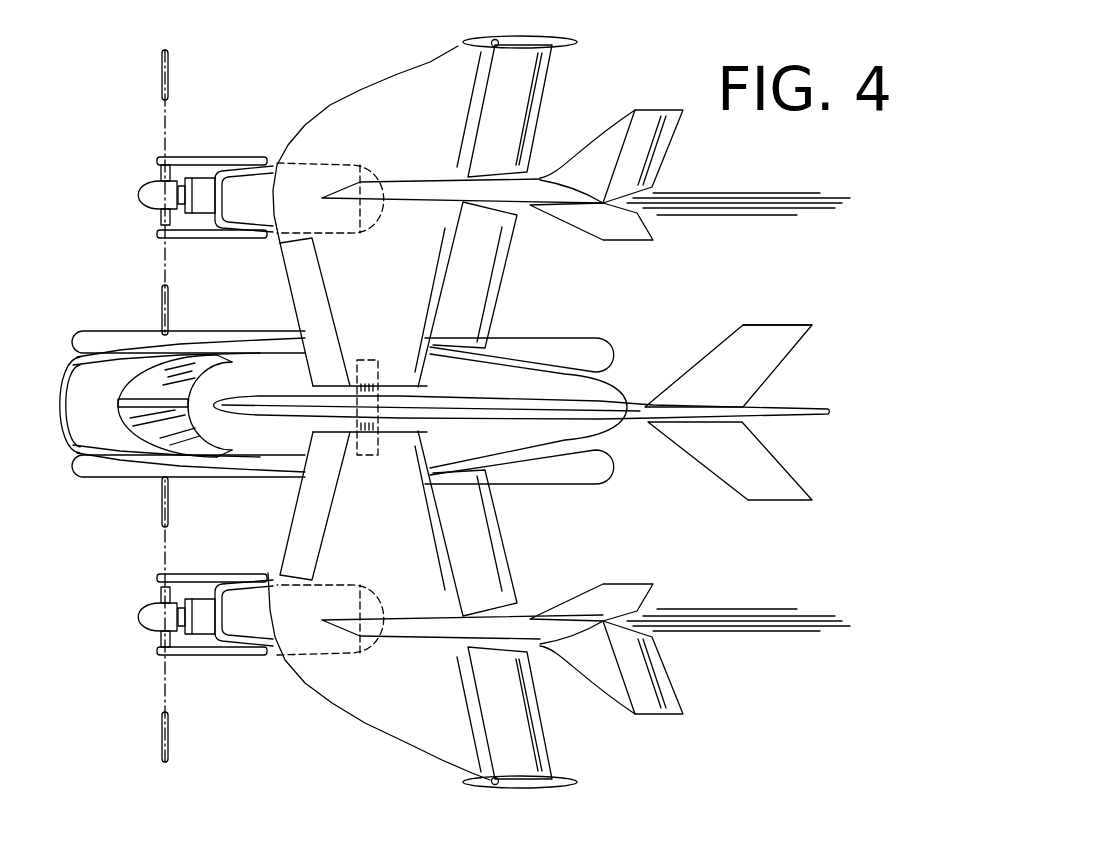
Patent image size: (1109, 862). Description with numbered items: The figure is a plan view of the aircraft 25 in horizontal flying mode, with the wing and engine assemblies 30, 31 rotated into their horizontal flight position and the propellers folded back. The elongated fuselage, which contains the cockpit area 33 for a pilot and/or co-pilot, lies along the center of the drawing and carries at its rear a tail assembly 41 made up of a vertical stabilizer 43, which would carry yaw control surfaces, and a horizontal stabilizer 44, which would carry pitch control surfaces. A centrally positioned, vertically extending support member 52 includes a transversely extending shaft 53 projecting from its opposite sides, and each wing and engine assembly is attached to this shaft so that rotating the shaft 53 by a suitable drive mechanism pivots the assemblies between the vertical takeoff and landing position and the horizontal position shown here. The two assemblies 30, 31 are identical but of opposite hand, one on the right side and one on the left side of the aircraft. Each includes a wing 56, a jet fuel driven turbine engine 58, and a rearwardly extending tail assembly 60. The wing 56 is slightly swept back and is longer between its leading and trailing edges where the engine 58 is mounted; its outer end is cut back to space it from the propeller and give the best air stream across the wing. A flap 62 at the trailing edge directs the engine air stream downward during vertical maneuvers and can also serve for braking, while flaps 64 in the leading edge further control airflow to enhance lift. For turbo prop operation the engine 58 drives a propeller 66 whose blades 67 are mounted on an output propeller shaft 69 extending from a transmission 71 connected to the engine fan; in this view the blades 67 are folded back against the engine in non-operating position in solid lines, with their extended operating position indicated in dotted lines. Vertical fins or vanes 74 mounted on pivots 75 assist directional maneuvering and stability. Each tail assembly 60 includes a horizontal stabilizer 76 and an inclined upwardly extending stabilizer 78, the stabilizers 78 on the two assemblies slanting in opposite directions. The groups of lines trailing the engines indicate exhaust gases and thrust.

The aircraft 25 is at (752, 157).
The wing and engine assembly 30 is at (461, 193).
The wing and engine assembly 31 is at (340, 703).
The cockpit area 33 is at (160, 385).
The tail assembly 41 is at (795, 403).
The vertical stabilizer 43 is at (645, 403).
The horizontal stabilizer 44 is at (780, 338).
The support member 52 is at (417, 408).
The shaft 53 is at (350, 383).
The wing 56 is at (493, 46).
The jet fuel driven turbine engine 58 is at (262, 189).
The tail assembly 60 is at (618, 122).
The flap 62 is at (518, 109).
The flap 64 is at (303, 301).
The propeller 66 is at (150, 210).
The blade 67 is at (180, 193).
The output propeller shaft 69 is at (183, 182).
The transmission 71 is at (193, 208).
The vertical fin 74 is at (523, 40).
The pivot 75 is at (496, 39).
The horizontal stabilizer 76 is at (598, 152).
The inclined upwardly extending stabilizer 78 is at (628, 232).